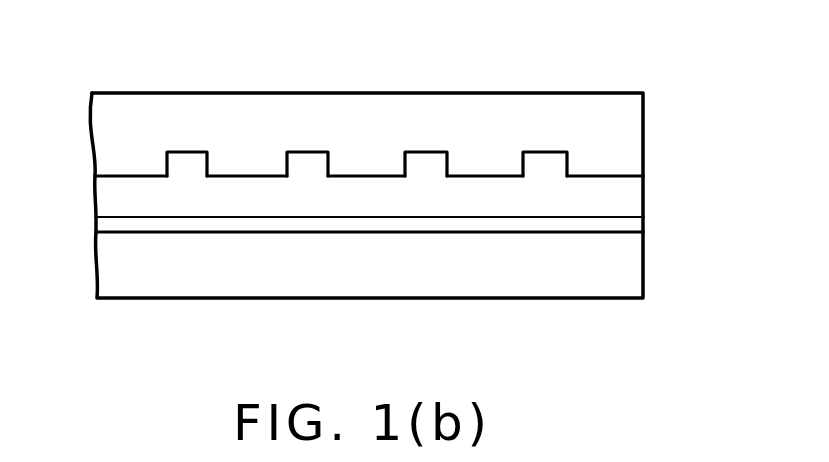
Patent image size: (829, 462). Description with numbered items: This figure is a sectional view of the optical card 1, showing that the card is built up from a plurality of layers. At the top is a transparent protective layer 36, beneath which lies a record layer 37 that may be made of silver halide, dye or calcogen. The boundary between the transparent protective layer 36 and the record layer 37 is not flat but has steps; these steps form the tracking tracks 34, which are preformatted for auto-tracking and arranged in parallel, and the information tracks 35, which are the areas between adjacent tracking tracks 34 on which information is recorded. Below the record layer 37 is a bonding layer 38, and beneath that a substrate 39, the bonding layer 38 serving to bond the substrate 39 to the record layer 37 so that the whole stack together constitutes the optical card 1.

The optical card 1 is at (73, 93).
The tracking tracks 34 is at (303, 152).
The information tracks 35 is at (472, 177).
The transparent protective layer 36 is at (637, 142).
The record layer 37 is at (637, 204).
The bonding layer 38 is at (640, 230).
The substrate 39 is at (636, 272).